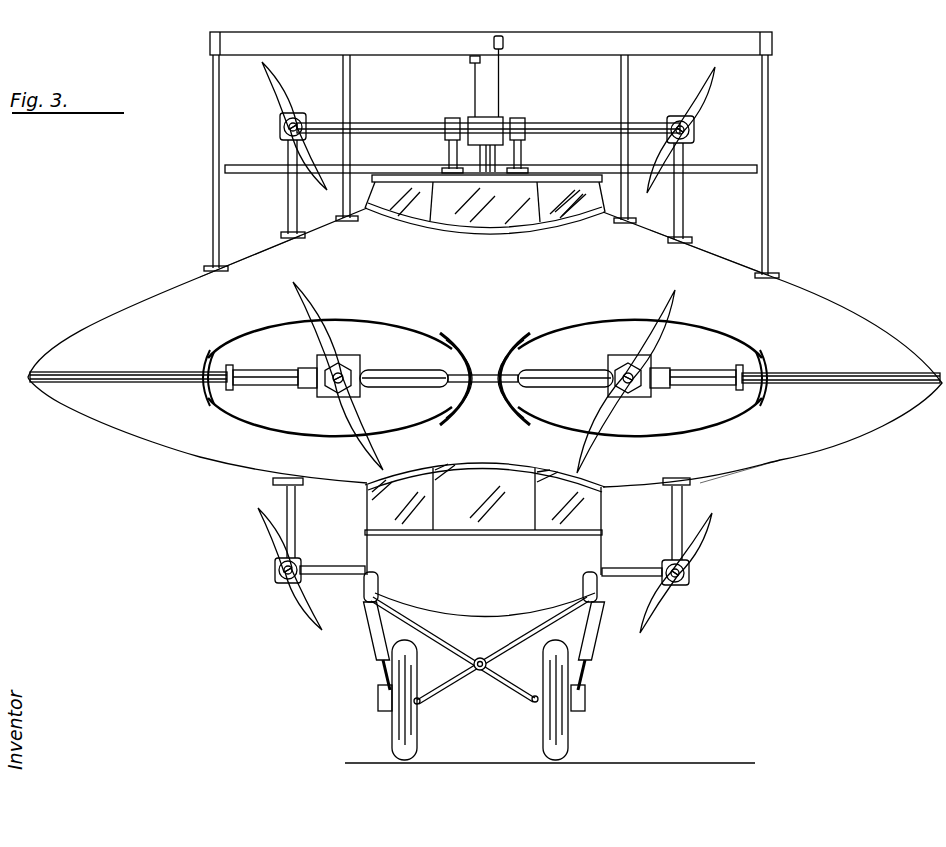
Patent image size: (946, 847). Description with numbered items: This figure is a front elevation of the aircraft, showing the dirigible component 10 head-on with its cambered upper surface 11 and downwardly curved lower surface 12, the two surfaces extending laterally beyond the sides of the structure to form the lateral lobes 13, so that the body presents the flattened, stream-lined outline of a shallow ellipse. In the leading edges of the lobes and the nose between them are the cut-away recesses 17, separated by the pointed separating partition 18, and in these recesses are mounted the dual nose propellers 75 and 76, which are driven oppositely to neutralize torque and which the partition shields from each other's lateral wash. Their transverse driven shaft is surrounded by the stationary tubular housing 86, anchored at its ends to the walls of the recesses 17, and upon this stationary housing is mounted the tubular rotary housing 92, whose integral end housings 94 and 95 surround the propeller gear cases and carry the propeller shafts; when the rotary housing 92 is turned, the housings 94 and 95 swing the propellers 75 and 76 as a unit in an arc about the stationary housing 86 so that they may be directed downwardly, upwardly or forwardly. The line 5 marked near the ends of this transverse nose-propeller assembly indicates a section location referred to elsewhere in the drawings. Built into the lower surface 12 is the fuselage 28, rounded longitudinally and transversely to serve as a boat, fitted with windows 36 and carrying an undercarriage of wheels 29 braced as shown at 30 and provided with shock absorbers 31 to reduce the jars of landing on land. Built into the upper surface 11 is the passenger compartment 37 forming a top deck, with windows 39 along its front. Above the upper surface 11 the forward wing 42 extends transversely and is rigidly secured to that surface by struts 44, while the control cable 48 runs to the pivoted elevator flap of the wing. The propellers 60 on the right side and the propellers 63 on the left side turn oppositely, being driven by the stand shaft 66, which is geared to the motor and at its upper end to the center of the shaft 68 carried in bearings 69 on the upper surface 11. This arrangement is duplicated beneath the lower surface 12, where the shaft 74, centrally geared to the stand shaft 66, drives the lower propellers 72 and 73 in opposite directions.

The main transverse shaft 5 is at (209, 373).
The dirigible component 10 is at (882, 352).
The upper surface 11 is at (828, 302).
The lower surface 12 is at (780, 452).
The lateral lobes 13 is at (165, 298).
The recesses 17 is at (363, 323).
The separating partition 18 is at (484, 362).
The fuselage 28 is at (590, 555).
The wheels 29 is at (420, 735).
The bracing 30 is at (450, 652).
The shock absorbers 31 is at (372, 640).
The windows 36 is at (375, 505).
The passenger compartment 37 is at (505, 236).
The windows 39 is at (574, 214).
The forward wing 42 is at (543, 40).
The struts 44 is at (212, 118).
The control cable 48 is at (478, 82).
The propellers 60 is at (276, 92).
The propellers 63 is at (710, 98).
The stand shaft 66 is at (490, 152).
The shaft 68 is at (558, 126).
The bearings 69 is at (450, 118).
The propellers 72 is at (304, 618).
The propellers 73 is at (706, 532).
The shaft 74 is at (332, 566).
The nose propeller 75 is at (360, 440).
The nose propeller 76 is at (600, 440).
The stationary tubular housing 86 is at (256, 372).
The tubular rotary housing 92 is at (398, 371).
The housing 94 is at (360, 362).
The housing 95 is at (628, 358).